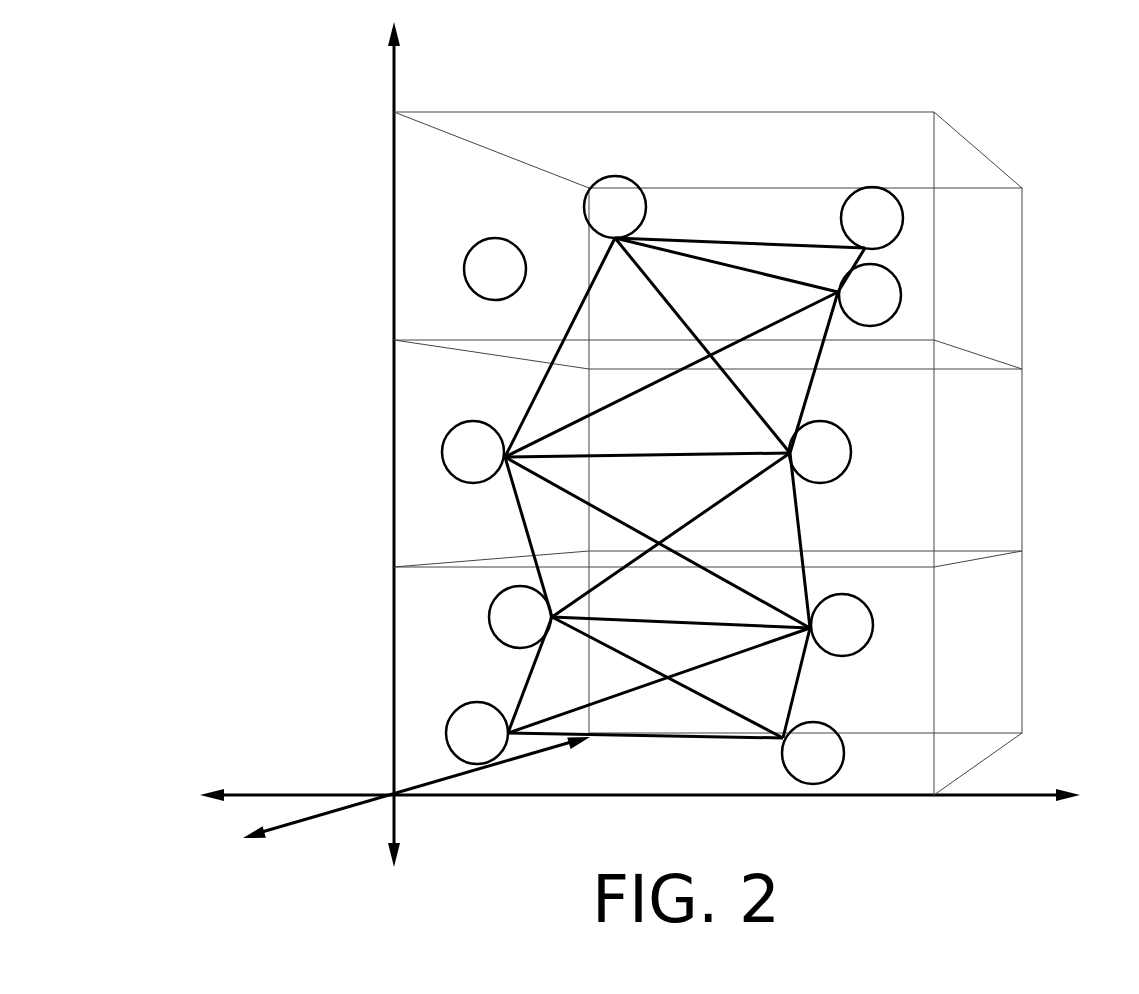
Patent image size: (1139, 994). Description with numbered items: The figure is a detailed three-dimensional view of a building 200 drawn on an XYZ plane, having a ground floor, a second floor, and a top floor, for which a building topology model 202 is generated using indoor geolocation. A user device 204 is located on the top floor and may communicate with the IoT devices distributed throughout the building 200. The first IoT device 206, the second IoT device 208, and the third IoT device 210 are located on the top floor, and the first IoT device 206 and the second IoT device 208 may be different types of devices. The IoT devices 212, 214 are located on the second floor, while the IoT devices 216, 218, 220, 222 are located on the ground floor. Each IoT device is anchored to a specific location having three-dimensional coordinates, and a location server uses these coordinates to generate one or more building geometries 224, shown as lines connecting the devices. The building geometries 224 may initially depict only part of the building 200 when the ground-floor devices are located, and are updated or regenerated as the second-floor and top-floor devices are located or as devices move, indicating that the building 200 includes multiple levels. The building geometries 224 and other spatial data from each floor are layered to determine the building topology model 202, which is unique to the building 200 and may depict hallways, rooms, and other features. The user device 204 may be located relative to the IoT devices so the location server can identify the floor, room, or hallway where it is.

The building 200 is at (280, 130).
The building topology model 202 is at (720, 112).
The user device 204 is at (476, 281).
The first IoT device 206 is at (596, 219).
The second IoT device 208 is at (853, 230).
The third IoT device 210 is at (851, 307).
The IoT device 212 is at (801, 464).
The IoT device 214 is at (454, 464).
The IoT device 216 is at (501, 629).
The IoT device 218 is at (823, 637).
The IoT device 220 is at (794, 765).
The IoT device 222 is at (458, 745).
The building geometries 224 is at (686, 458).